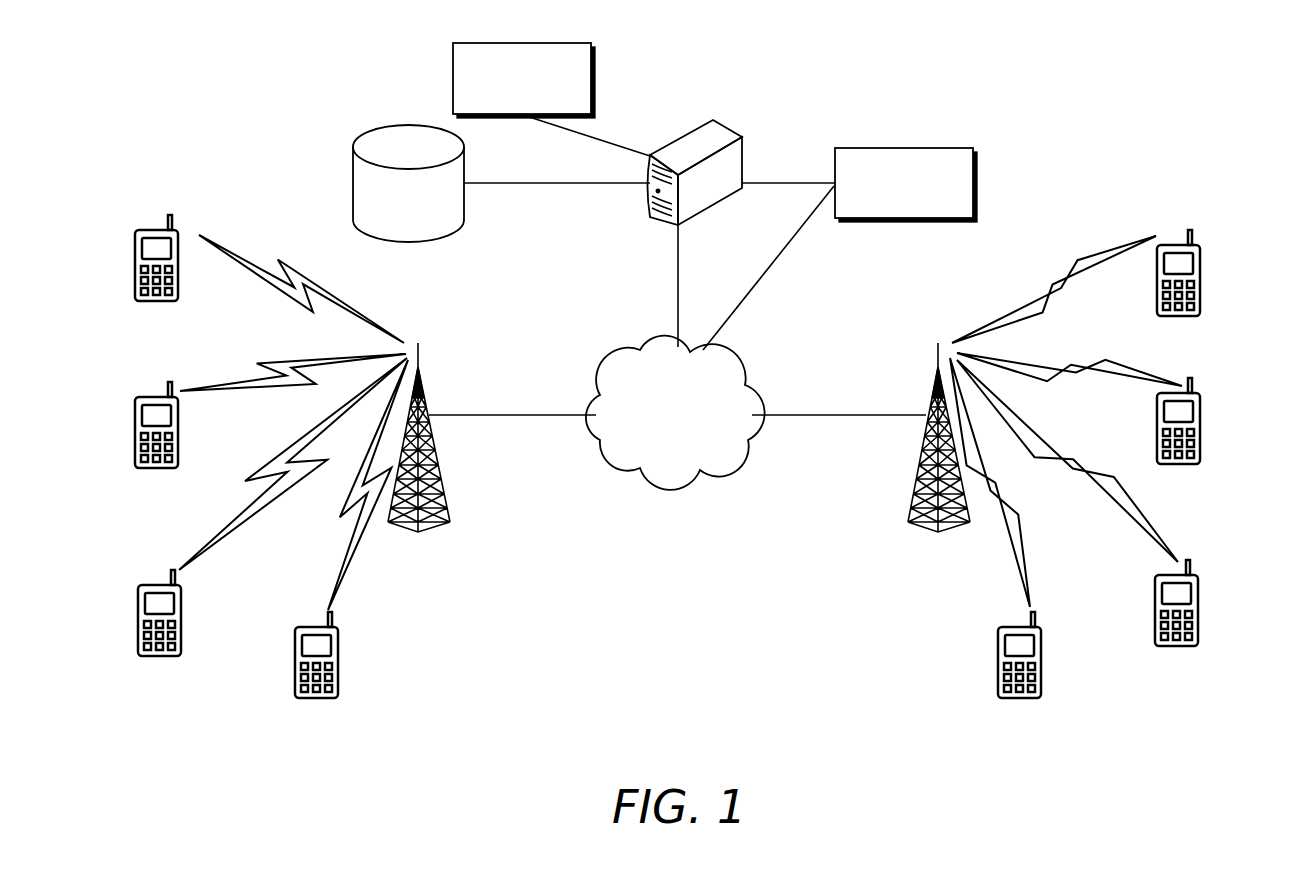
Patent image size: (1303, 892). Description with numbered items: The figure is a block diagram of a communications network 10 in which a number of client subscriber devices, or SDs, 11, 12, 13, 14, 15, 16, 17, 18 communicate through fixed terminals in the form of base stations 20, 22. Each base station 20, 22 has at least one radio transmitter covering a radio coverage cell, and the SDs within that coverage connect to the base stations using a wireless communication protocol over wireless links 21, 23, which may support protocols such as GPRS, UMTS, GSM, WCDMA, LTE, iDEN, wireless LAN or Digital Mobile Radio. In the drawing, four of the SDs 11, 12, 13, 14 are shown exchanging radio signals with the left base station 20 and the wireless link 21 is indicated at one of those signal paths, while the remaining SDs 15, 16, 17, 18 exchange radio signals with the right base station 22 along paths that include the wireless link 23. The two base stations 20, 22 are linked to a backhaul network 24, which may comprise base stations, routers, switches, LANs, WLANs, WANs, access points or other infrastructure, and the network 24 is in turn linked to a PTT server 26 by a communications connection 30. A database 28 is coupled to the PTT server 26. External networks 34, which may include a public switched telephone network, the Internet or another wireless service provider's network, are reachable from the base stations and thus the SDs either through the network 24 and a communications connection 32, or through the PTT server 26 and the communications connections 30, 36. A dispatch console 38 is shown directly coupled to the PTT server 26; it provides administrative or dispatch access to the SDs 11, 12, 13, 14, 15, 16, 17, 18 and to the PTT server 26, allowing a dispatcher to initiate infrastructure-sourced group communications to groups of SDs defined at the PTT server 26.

The communications network 10 is at (1279, 774).
The client subscriber device 11 is at (152, 230).
The client subscriber device 12 is at (153, 396).
The client subscriber device 13 is at (157, 585).
The client subscriber device 14 is at (313, 626).
The client subscriber device 15 is at (1043, 662).
The client subscriber device 16 is at (1199, 612).
The client subscriber device 17 is at (1201, 431).
The client subscriber device 18 is at (1201, 283).
The fixed terminal 20 is at (422, 388).
The wireless link 21 is at (364, 564).
The fixed terminal 22 is at (933, 393).
The wireless link 23 is at (990, 569).
The backhaul network 24 is at (652, 475).
The PTT server 26 is at (733, 134).
The database 28 is at (372, 129).
The communications connection 30 is at (677, 289).
The communications connection 32 is at (773, 268).
The external networks 34 is at (960, 150).
The communications connection 36 is at (789, 181).
The dispatch console 38 is at (575, 43).